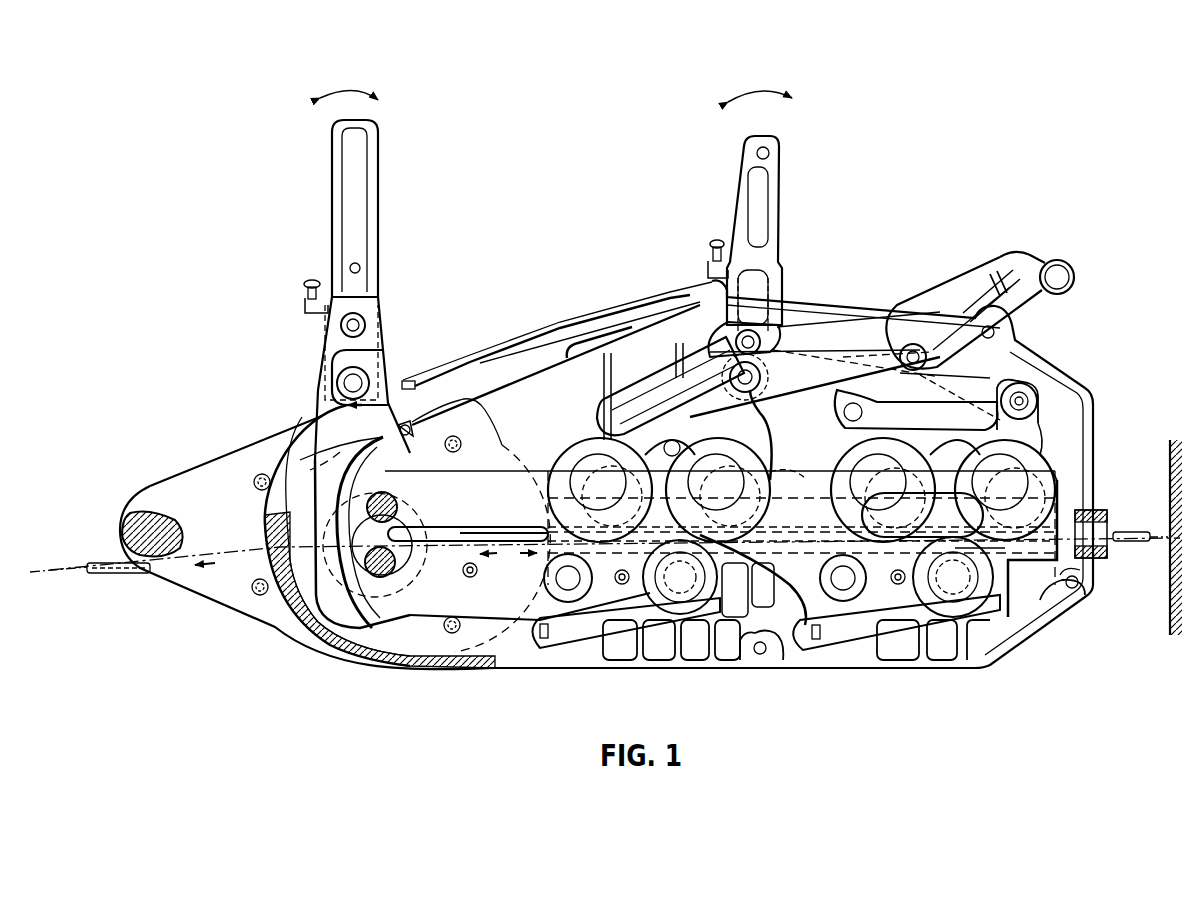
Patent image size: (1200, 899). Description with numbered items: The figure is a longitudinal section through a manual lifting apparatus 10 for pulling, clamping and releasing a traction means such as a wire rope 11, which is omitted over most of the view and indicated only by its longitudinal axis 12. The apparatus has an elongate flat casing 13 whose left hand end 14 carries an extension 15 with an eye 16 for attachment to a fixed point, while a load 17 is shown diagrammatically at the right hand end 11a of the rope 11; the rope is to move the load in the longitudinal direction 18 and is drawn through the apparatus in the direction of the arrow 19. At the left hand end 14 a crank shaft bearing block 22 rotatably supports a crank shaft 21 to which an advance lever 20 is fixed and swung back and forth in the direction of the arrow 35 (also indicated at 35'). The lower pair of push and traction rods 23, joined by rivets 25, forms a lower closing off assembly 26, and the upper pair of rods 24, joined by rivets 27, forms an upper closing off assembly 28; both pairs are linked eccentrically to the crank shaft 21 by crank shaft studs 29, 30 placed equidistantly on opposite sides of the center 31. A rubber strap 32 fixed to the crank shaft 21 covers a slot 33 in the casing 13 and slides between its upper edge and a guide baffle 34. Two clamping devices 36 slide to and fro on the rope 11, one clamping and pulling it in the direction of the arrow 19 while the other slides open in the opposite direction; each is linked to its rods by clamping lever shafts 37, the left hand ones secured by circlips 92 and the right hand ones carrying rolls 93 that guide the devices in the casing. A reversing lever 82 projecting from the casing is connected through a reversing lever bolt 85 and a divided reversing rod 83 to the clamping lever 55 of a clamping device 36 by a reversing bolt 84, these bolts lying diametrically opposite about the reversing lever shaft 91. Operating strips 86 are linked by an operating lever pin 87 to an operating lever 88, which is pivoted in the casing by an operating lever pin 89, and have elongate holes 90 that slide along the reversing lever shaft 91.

The manual lifting apparatus 10 is at (882, 172).
The wire rope 11 is at (98, 560).
The right hand end of the traction means 11a is at (1130, 530).
The longitudinal axis 12 is at (85, 575).
The casing 13 is at (840, 302).
The left hand end 14 is at (306, 568).
The extension 15 is at (233, 470).
The eye 16 is at (165, 525).
The load 17 is at (1195, 597).
The longitudinal direction 18 is at (505, 560).
The arrow 19 is at (222, 562).
The advance lever 20 is at (365, 195).
The crank shaft 21 is at (300, 612).
The crank shaft bearing block 22 is at (430, 652).
The push and traction rods 23 is at (510, 598).
The push and traction rods 24 is at (532, 475).
The rivets 25 is at (470, 580).
The lower closing off assembly 26 is at (432, 615).
The rivets 27 is at (896, 583).
The upper closing off assembly 28 is at (500, 450).
The crank shaft stud 29 is at (392, 572).
The crank shaft stud 30 is at (393, 497).
The center of the crank shaft 31 is at (392, 524).
The rubber strap 32 is at (448, 408).
The slot 33 is at (497, 355).
The guide baffle 34 is at (632, 327).
The arrow 35 is at (363, 110).
The lever pivoting direction 35' is at (775, 114).
The clamping device 36 is at (568, 425).
The clamping lever shafts 37 is at (555, 592).
The clamping lever 55 is at (765, 437).
The reversing lever 82 is at (770, 152).
The reversing rod 83 is at (980, 383).
The reversing bolt 84 is at (1037, 398).
The reversing lever bolt 85 is at (772, 340).
The operating strips 86 is at (830, 355).
The operating lever pin 87 is at (905, 345).
The operating lever 88 is at (1030, 265).
The operating lever pin 89 is at (862, 412).
The elongate holes 90 is at (648, 405).
The reversing lever shaft 91 is at (762, 380).
The circlips 92 is at (568, 612).
The rolls 93 is at (684, 610).